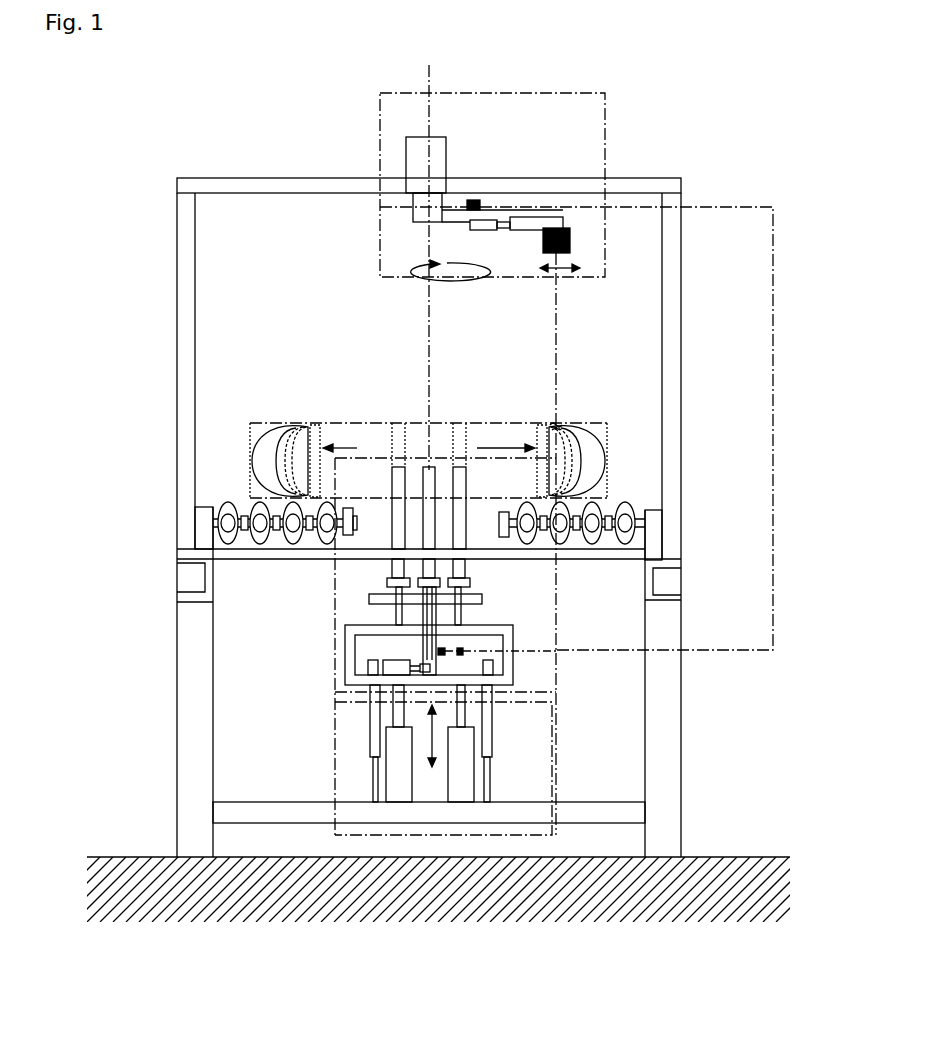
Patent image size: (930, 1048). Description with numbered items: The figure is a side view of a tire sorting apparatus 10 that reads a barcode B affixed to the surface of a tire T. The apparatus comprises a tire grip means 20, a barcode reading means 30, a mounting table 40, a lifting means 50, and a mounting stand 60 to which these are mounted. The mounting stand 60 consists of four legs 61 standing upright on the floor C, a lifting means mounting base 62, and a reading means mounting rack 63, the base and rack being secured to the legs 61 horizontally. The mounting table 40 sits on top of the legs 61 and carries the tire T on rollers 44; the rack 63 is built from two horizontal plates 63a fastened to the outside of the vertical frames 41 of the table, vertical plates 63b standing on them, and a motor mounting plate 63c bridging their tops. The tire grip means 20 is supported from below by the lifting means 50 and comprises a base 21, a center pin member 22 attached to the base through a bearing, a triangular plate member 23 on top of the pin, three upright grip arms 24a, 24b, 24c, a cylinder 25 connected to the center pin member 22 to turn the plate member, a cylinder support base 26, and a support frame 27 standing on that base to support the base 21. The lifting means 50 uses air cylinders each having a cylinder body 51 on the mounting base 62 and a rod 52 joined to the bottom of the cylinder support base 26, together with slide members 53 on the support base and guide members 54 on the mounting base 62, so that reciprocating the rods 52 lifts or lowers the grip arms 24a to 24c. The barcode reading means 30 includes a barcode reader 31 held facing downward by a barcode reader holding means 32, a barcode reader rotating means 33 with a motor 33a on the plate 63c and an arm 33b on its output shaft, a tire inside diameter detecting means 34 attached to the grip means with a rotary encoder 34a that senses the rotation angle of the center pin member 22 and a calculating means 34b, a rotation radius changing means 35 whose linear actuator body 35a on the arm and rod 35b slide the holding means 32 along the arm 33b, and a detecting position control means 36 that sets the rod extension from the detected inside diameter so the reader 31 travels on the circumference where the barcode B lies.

The tire sorting apparatus 10 is at (688, 201).
The tire grip means 20 is at (350, 592).
The base 21 is at (492, 630).
The center pin member 22 is at (436, 614).
The triangular plate member 23 is at (480, 600).
The grip arm 24a is at (398, 480).
The grip arm 24b is at (430, 478).
The grip arm 24c is at (460, 478).
The cylinder 25 is at (362, 636).
The cylinder support base 26 is at (358, 672).
The support frame 27 is at (360, 641).
The barcode reading means 30 is at (528, 102).
The barcode reader 31 is at (570, 240).
The barcode reader holding means 32 is at (548, 207).
The barcode reader rotating means 33 is at (516, 106).
The motor 33a is at (436, 140).
The arm 33b is at (455, 218).
The tire inside diameter detecting means 34 is at (594, 668).
The rotary encoder 34a is at (444, 656).
The tire inside diameter calculating means 34b is at (463, 652).
The rotation radius changing means 35 is at (465, 310).
The linear actuator body 35a is at (488, 232).
The rod 35b is at (506, 232).
The detecting position control means 36 is at (486, 204).
The mounting table 40 is at (245, 500).
The vertical frame 41 is at (202, 518).
The roller 44 is at (232, 502).
The lifting means 50 is at (358, 716).
The cylinder body 51 is at (462, 768).
The rod 52 is at (463, 718).
The slide member 53 is at (373, 745).
The guide member 54 is at (375, 772).
The mounting stand 60 is at (683, 632).
The leg 61 is at (197, 712).
The lifting means mounting base 62 is at (277, 802).
The reading means mounting rack 63 is at (618, 178).
The horizontal plate 63a is at (668, 560).
The vertical plate 63b is at (672, 358).
The motor mounting plate 63c is at (637, 185).
The tire T is at (263, 425).
The barcode B is at (556, 425).
The floor C is at (728, 858).